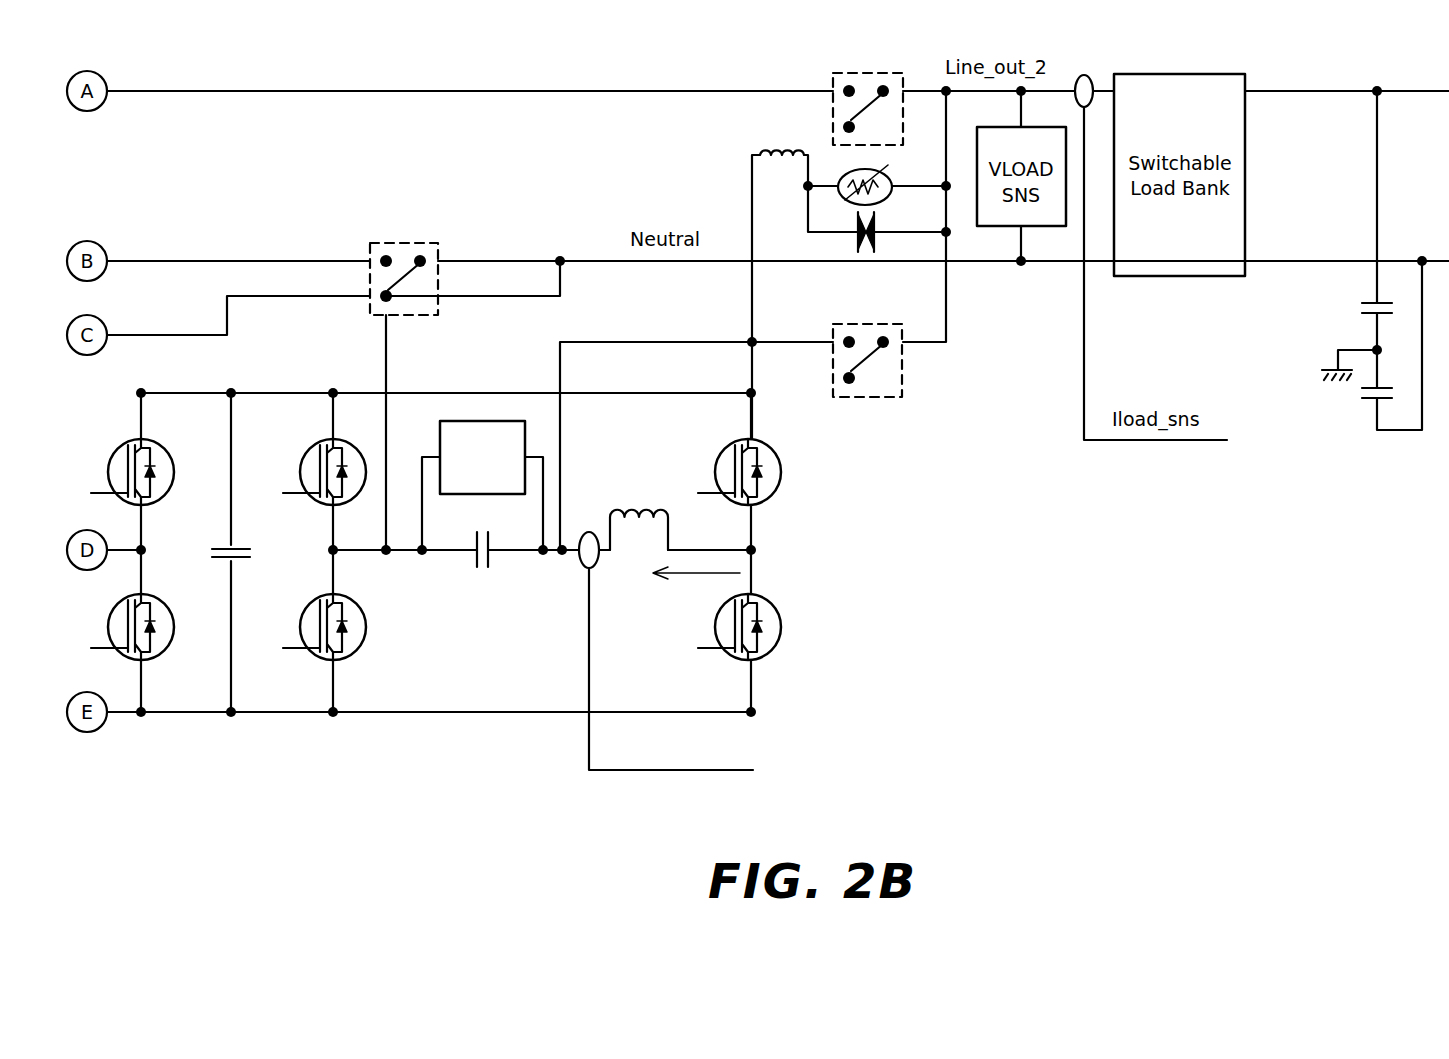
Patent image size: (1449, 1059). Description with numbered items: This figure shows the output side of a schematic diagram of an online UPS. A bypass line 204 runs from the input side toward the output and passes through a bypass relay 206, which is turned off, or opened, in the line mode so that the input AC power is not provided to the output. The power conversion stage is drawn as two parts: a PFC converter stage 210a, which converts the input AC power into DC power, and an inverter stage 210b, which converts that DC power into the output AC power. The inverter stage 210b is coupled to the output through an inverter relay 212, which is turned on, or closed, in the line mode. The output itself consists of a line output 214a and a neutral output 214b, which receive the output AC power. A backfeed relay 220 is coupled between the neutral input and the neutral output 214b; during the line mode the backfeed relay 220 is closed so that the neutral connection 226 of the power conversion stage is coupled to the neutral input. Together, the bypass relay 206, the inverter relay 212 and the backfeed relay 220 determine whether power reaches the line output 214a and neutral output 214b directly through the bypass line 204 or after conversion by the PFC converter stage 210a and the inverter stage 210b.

The bypass line 204 is at (530, 91).
The bypass relay 206 is at (867, 73).
The inverter relay 212 is at (865, 397).
The line output 214a is at (1418, 88).
The neutral output 214b is at (1341, 263).
The backfeed relay 220 is at (415, 243).
The neutral connection 226 is at (386, 553).
The PFC converter stage 210a is at (128, 792).
The inverter stage 210b is at (557, 630).